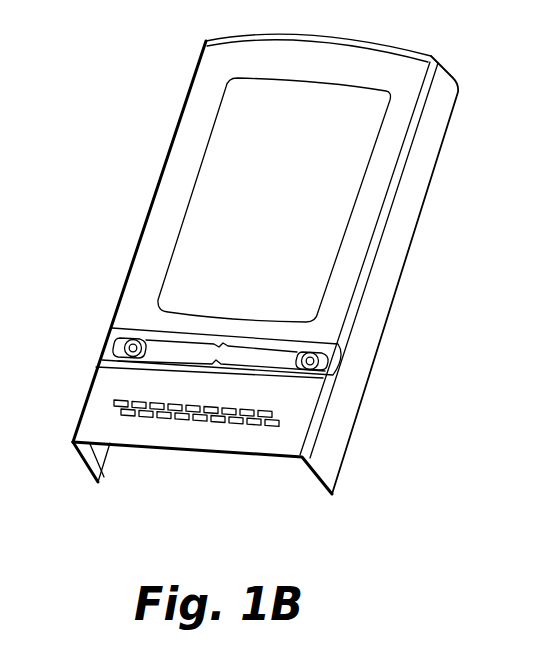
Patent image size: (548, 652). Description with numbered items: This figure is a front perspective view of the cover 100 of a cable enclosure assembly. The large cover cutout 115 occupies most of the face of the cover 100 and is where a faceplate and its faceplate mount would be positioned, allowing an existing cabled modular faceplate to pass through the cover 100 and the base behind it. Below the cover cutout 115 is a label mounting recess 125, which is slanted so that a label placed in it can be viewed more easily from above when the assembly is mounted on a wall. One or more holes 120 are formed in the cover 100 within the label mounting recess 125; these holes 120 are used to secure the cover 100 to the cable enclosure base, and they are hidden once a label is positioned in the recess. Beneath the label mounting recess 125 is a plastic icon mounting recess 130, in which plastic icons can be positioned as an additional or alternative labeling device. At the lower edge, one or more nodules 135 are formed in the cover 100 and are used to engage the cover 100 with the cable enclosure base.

The cover 100 is at (168, 80).
The cover cutout 115 is at (322, 191).
The holes 120 is at (125, 340).
The label mounting recess 125 is at (233, 355).
The plastic icon mounting recess 130 is at (280, 417).
The nodules 135 is at (108, 450).